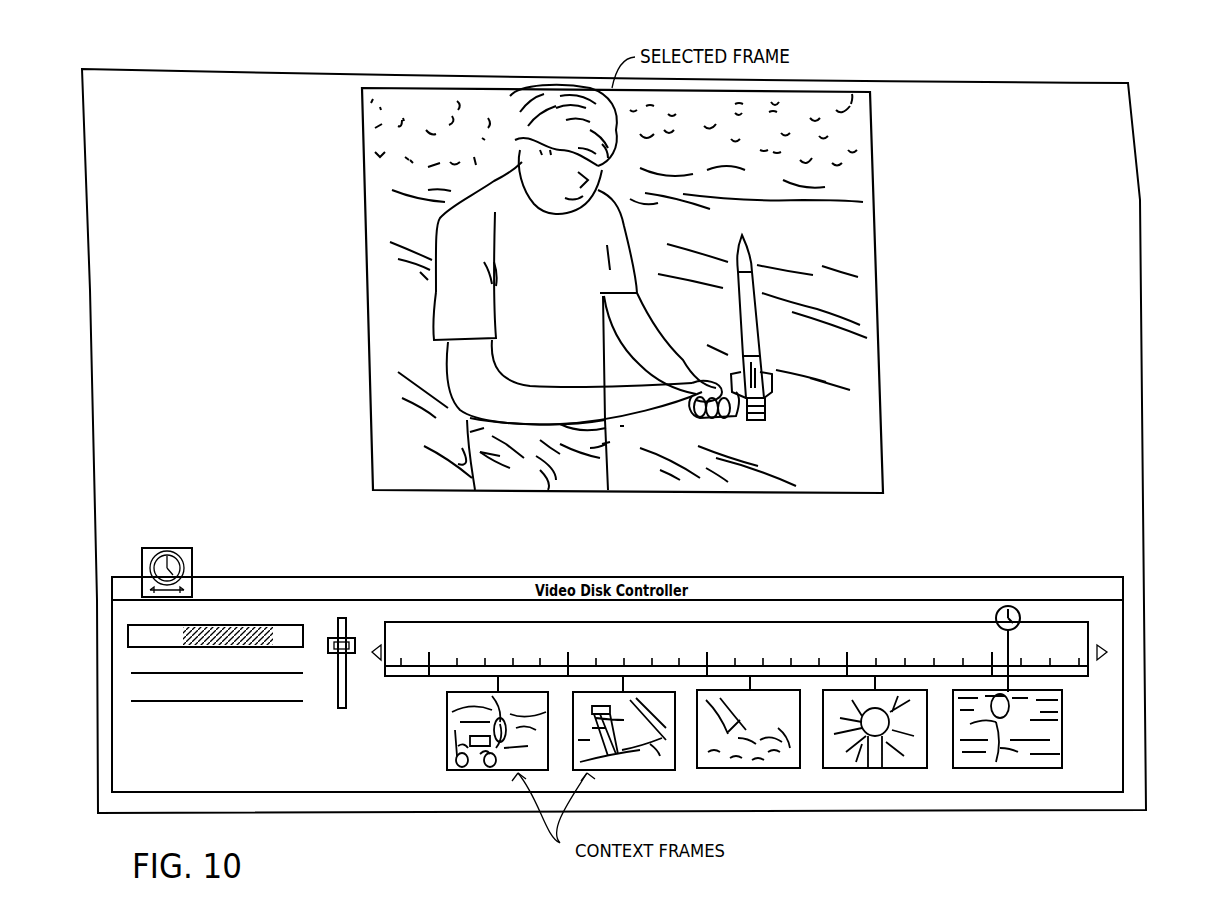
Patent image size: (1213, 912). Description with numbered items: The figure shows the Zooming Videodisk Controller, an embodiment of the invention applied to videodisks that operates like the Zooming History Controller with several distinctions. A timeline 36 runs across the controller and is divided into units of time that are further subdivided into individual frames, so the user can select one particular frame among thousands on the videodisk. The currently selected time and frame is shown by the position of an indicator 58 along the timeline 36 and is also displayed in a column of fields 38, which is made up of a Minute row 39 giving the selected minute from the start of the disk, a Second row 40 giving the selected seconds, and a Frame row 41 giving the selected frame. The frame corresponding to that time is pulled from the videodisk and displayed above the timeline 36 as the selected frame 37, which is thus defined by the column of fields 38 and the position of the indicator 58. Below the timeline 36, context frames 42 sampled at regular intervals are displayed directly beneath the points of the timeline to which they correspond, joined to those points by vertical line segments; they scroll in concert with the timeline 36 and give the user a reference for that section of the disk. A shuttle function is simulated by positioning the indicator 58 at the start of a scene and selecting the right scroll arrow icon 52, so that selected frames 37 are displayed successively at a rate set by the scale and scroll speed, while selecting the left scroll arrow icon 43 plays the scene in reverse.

The timeline 36 is at (976, 622).
The selected frame 37 is at (872, 135).
The column of fields 38 is at (180, 646).
The Minute field row 39 is at (128, 637).
The Second field row 40 is at (130, 662).
The Frame field row 41 is at (128, 683).
The context frames 42 is at (467, 773).
The left scroll arrow icon 43 is at (378, 655).
The right scroll arrow icon 52 is at (1100, 648).
The indicator 58 is at (1016, 606).